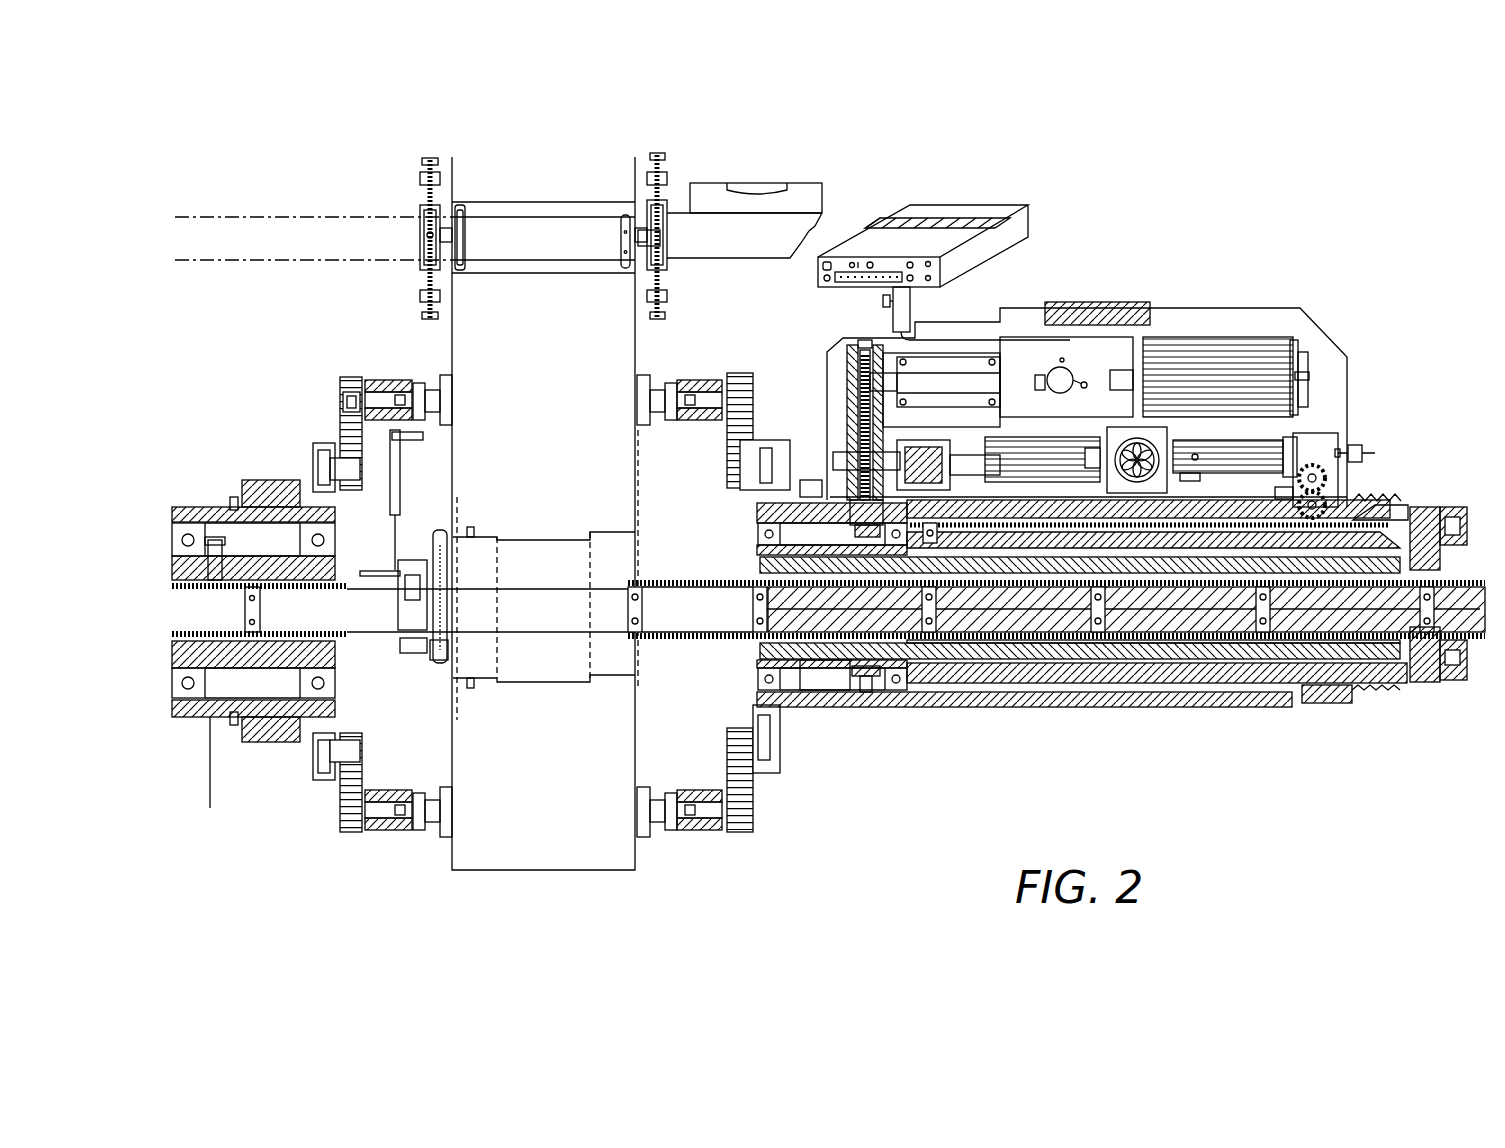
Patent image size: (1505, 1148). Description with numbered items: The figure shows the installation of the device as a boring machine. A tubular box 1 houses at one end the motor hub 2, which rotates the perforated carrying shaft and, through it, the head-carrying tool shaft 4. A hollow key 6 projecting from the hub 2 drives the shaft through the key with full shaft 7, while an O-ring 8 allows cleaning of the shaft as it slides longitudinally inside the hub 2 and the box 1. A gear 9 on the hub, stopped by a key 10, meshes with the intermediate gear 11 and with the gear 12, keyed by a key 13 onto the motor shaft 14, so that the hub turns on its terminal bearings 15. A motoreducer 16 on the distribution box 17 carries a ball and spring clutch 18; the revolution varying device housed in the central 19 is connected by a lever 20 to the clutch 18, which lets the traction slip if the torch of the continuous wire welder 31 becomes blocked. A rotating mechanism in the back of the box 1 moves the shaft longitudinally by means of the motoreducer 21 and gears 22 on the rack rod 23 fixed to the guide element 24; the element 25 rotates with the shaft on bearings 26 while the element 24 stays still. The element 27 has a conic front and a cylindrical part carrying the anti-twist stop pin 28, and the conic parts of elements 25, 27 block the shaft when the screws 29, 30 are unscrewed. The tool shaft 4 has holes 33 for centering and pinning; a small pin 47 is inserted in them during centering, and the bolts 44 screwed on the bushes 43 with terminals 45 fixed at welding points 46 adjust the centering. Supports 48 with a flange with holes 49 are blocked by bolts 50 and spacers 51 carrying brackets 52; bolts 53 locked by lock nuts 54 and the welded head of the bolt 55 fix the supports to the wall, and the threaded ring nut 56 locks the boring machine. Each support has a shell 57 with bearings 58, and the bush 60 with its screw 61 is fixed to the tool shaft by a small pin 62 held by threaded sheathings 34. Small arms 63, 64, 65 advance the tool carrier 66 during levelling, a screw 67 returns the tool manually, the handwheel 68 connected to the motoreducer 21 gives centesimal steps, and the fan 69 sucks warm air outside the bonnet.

The tubular box 1 is at (1175, 707).
The motor hub 2 is at (757, 650).
The head-carrying tool shaft 4 is at (370, 618).
The hollow key 6 is at (825, 640).
The key with full shaft 7 is at (653, 583).
The O-ring 8 is at (757, 563).
The gear 9 is at (868, 700).
The key 10 is at (822, 492).
The intermediate gear 11 is at (847, 430).
The gear 12 is at (860, 345).
The key 13 is at (847, 388).
The motor shaft 14 is at (970, 372).
The terminal bearings 15 is at (903, 700).
The motoreducer 16 is at (1068, 440).
The distribution box 17 is at (847, 405).
The ball and spring clutch 18 is at (908, 442).
The central 19 is at (958, 210).
The lever 20 is at (890, 412).
The motoreducer 21 is at (1205, 440).
The gears 22 is at (1320, 465).
The rack rod 23 is at (1360, 507).
The guide element 24 is at (1390, 500).
The element 25 is at (1064, 645).
The bearings 26 is at (1383, 692).
The element 27 is at (1110, 660).
The stop pin 28 is at (992, 547).
The screw 29 is at (1438, 507).
The screw 30 is at (1458, 507).
The continuous wire welder 31 is at (653, 638).
The holes 33 is at (747, 592).
The threaded sheathings 34 is at (256, 598).
The bushes 43 is at (423, 208).
The bolts 44 is at (430, 160).
The terminals 45 is at (423, 293).
The welding points 46 is at (453, 302).
The small pin 47 is at (461, 205).
The supports 48 is at (312, 730).
The flange with holes 49 is at (315, 442).
The bolts 50 is at (342, 401).
The spacers 51 is at (378, 378).
The brackets 52 is at (345, 377).
The bolts 53 is at (427, 388).
The lock nuts 54 is at (412, 387).
The head of the bolt 55 is at (450, 368).
The threaded ring nut 56 is at (273, 480).
The shell 57 is at (180, 507).
The bearings 58 is at (328, 688).
The bush 60 is at (340, 640).
The screw 61 is at (214, 537).
The small pin 62 is at (245, 610).
The small arm 63 is at (367, 571).
The small arm 64 is at (400, 510).
The small arm 65 is at (407, 436).
The tool carrier 66 is at (447, 530).
The screw 67 is at (438, 660).
The handwheel 68 is at (1360, 445).
The fan 69 is at (1125, 430).